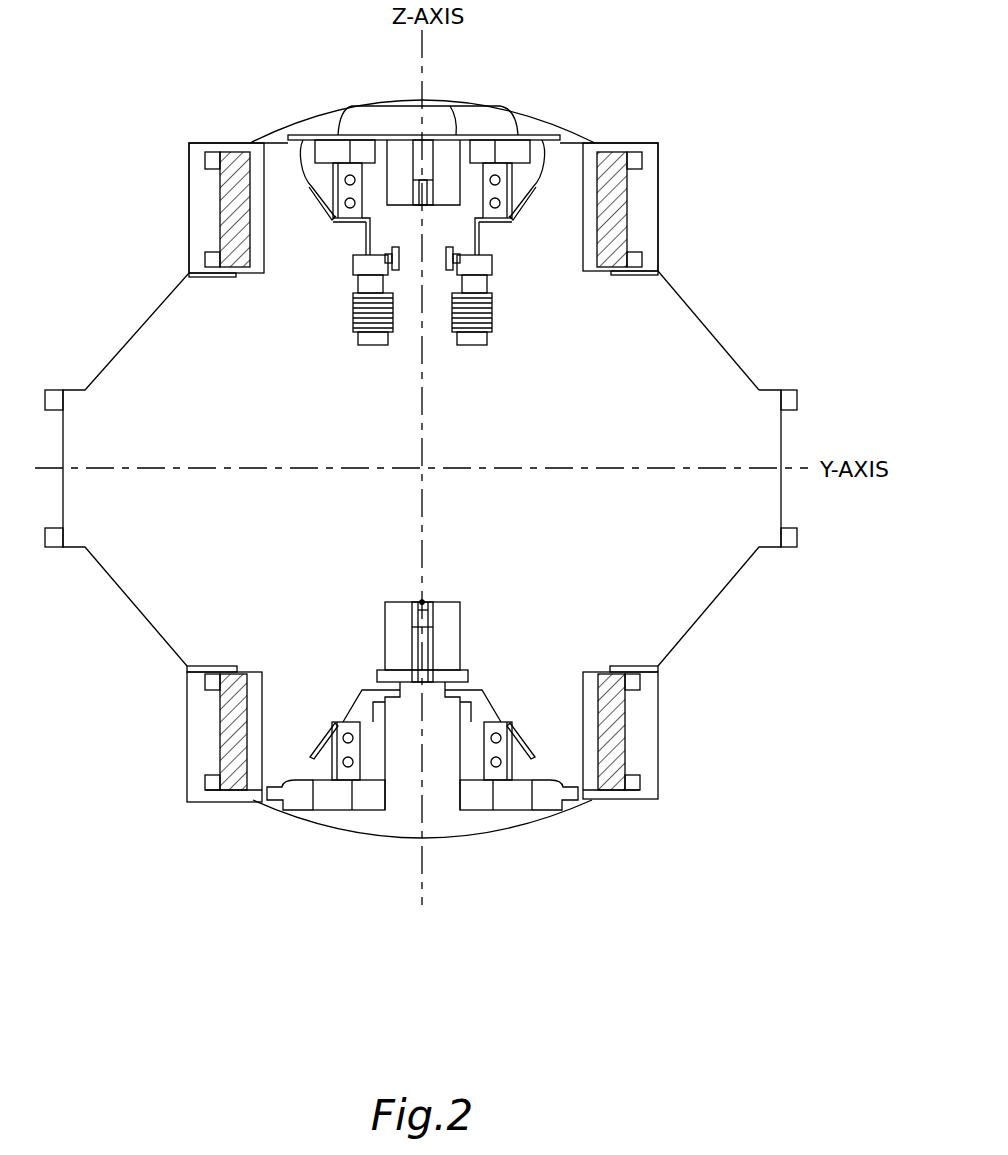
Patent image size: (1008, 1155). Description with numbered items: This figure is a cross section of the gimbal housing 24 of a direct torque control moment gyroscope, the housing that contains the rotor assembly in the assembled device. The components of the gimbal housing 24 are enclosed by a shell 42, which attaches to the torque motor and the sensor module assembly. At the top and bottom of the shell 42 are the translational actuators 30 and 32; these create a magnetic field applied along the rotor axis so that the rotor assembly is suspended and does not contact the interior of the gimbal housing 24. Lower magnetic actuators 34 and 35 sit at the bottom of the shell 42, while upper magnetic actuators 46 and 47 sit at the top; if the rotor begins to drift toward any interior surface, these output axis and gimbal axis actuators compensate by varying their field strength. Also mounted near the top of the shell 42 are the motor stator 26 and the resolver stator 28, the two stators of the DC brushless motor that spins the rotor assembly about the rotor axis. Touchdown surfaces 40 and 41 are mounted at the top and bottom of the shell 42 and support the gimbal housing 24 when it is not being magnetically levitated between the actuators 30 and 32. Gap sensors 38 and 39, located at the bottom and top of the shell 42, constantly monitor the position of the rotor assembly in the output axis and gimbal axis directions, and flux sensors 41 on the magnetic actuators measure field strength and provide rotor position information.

The gimbal housing 24 is at (848, 642).
The motor stator 26 is at (460, 345).
The resolver stator 28 is at (392, 248).
The upper translational actuator 30 is at (470, 100).
The lower translational actuator 32 is at (382, 628).
The lower magnetic actuator 34 is at (225, 717).
The lower magnetic actuator 35 is at (638, 713).
The gap sensor 38 is at (505, 822).
The gap sensor 39 is at (345, 108).
The touchdown surface 40 is at (283, 140).
The touchdown surface 41 is at (500, 222).
The shell 42 is at (710, 332).
The upper magnetic actuator 46 is at (228, 232).
The upper magnetic actuator 47 is at (615, 217).